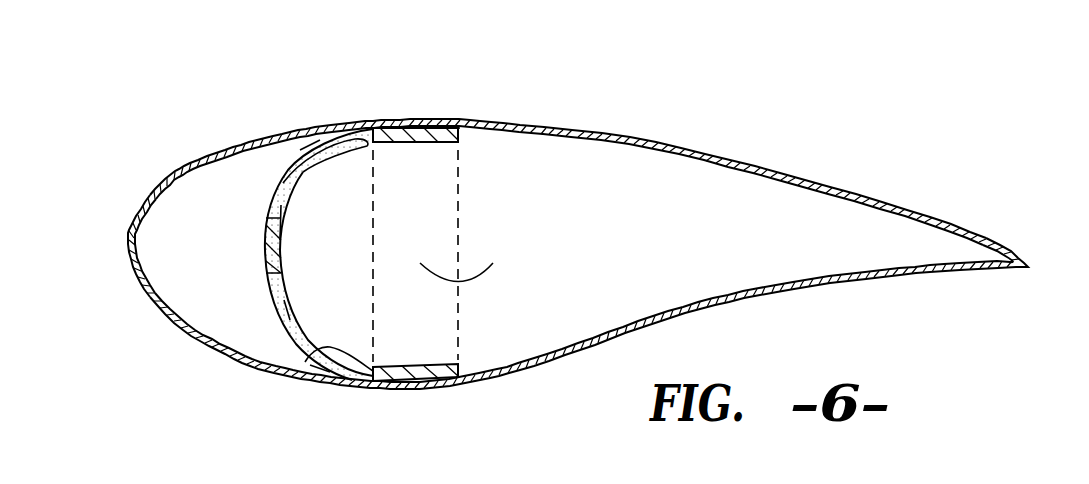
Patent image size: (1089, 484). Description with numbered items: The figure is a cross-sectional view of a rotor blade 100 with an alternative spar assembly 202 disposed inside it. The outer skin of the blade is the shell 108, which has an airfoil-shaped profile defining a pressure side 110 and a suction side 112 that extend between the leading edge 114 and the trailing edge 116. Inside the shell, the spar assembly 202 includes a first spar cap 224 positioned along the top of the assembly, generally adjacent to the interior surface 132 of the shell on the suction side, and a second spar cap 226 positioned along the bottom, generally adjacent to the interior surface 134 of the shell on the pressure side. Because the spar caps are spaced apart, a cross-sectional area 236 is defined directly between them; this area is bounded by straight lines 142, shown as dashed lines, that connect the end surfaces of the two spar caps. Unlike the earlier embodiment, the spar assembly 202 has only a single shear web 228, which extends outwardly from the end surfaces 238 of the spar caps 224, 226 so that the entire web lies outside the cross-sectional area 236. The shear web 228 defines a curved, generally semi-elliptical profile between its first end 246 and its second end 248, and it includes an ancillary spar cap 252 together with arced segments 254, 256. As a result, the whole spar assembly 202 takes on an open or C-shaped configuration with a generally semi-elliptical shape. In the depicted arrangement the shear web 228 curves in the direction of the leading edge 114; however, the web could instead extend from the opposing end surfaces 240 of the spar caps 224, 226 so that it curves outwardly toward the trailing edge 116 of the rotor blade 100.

The rotor blade 100 is at (580, 230).
The shell 108 is at (809, 174).
The pressure side 110 is at (807, 293).
The suction side 112 is at (702, 150).
The leading edge 114 is at (128, 243).
The trailing edge 116 is at (1032, 267).
The interior surface 132 is at (773, 173).
The interior surface 134 is at (787, 288).
The straight lines 142 is at (373, 258).
The spar assembly 202 is at (388, 253).
The first spar cap 224 is at (402, 127).
The second spar cap 226 is at (405, 380).
The shear web 228 is at (262, 302).
The cross-sectional area 236 is at (481, 259).
The end surfaces 238 is at (357, 140).
The opposing end surfaces 240 is at (462, 130).
The first end 246 is at (320, 162).
The second end 248 is at (299, 363).
The ancillary spar cap 252 is at (265, 249).
The arced segment 254 is at (285, 185).
The arced segment 256 is at (298, 335).